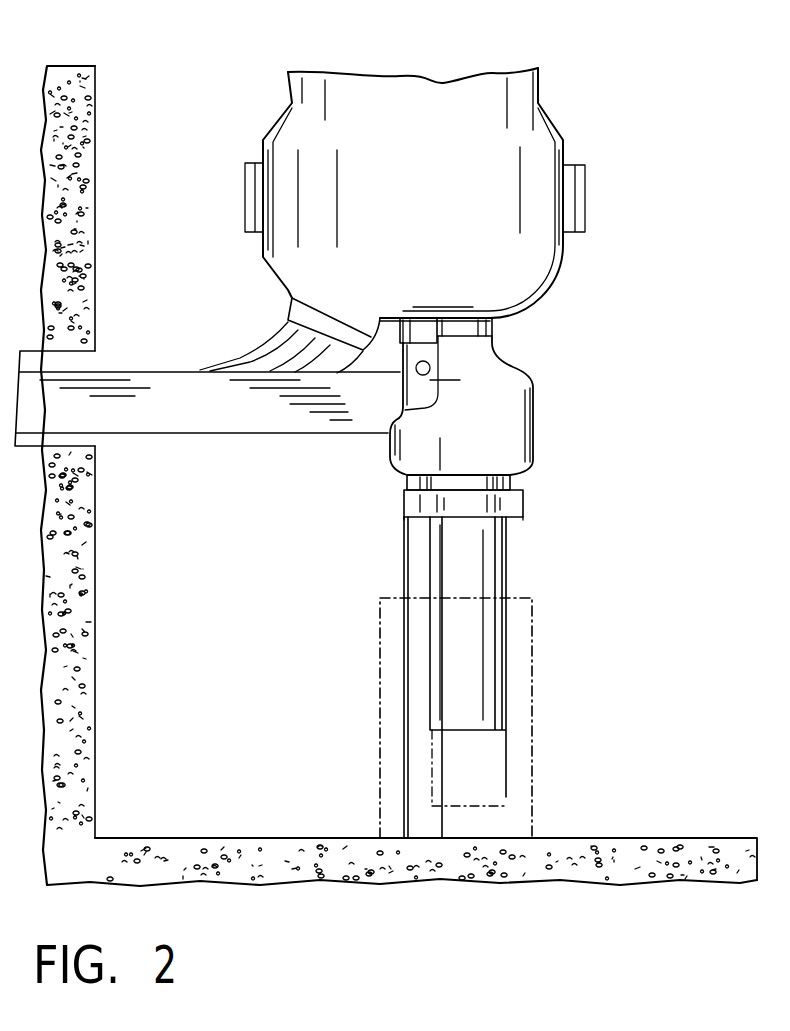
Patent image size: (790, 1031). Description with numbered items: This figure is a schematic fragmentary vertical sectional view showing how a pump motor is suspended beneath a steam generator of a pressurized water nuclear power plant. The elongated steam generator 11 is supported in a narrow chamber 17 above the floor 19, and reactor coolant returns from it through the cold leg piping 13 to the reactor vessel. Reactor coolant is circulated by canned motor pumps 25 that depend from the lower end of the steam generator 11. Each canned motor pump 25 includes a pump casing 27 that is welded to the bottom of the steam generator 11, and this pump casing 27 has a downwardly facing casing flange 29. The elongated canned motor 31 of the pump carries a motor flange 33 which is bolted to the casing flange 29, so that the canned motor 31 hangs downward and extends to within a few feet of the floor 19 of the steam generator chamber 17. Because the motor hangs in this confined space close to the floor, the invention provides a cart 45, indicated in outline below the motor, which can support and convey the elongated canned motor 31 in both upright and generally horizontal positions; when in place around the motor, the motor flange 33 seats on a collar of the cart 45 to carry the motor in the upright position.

The steam generator 11 is at (530, 127).
The cold leg piping 13 is at (213, 425).
The chamber 17 is at (145, 98).
The floor 19 is at (207, 838).
The canned motor pump 25 is at (546, 559).
The pump casing 27 is at (512, 410).
The casing flange 29 is at (487, 473).
The canned motor 31 is at (485, 693).
The motor flange 33 is at (503, 508).
The cart 45 is at (535, 797).